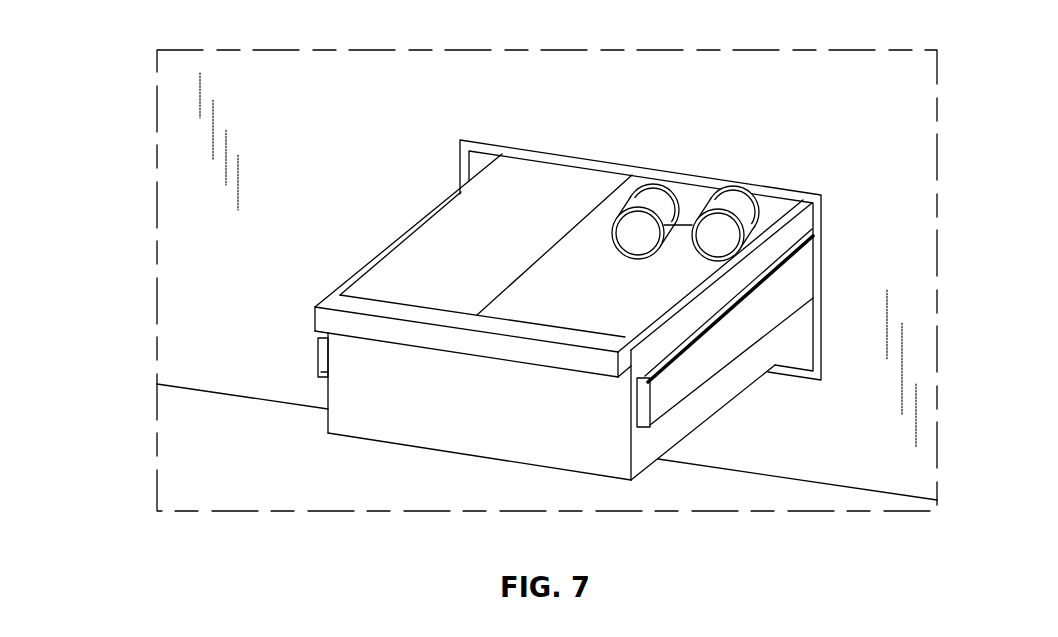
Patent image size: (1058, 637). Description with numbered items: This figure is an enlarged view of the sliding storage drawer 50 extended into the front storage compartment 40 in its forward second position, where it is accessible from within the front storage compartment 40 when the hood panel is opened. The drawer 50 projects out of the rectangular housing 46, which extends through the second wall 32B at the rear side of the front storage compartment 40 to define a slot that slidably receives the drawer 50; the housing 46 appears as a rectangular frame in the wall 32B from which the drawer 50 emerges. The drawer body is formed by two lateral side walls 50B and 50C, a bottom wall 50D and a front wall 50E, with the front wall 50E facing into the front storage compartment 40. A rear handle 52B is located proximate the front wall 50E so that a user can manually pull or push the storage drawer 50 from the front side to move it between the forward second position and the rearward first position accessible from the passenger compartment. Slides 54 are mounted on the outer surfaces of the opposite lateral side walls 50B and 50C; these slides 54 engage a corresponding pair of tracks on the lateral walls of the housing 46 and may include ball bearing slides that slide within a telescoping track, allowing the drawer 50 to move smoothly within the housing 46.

The second wall 32B is at (200, 275).
The front storage compartment 40 is at (178, 425).
The rectangular housing 46 is at (470, 162).
The sliding storage drawer 50 is at (344, 282).
The lateral side wall 50B is at (673, 332).
The lateral side wall 50C is at (398, 290).
The bottom wall 50D is at (553, 303).
The front wall 50E is at (393, 392).
The rear handle 52B is at (487, 358).
The slides 54 is at (320, 349).